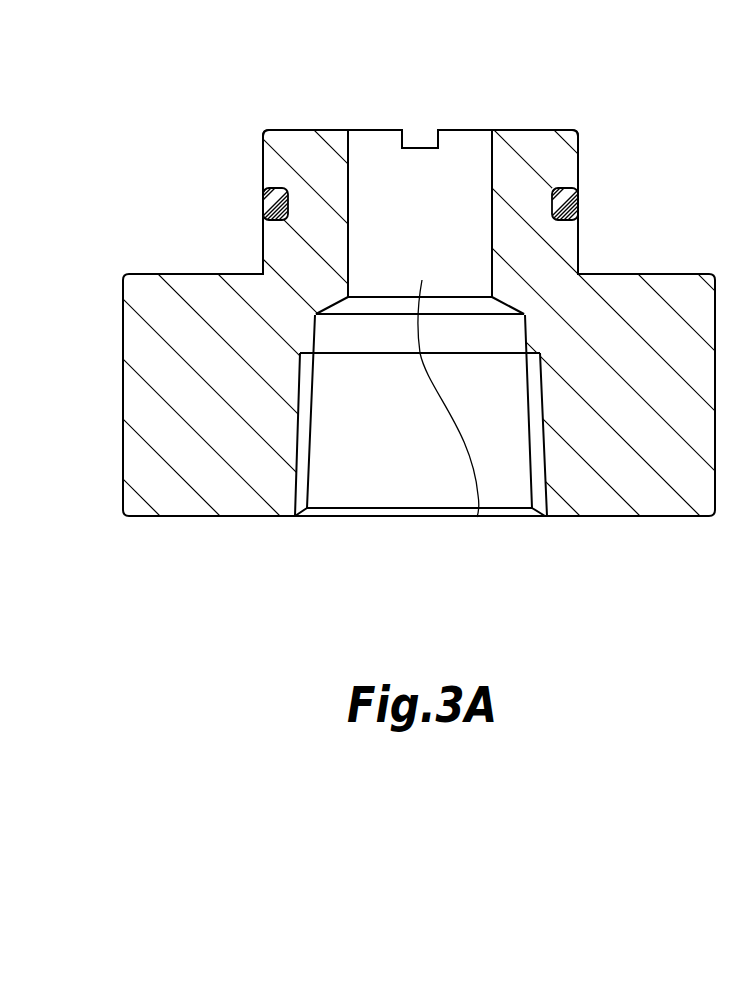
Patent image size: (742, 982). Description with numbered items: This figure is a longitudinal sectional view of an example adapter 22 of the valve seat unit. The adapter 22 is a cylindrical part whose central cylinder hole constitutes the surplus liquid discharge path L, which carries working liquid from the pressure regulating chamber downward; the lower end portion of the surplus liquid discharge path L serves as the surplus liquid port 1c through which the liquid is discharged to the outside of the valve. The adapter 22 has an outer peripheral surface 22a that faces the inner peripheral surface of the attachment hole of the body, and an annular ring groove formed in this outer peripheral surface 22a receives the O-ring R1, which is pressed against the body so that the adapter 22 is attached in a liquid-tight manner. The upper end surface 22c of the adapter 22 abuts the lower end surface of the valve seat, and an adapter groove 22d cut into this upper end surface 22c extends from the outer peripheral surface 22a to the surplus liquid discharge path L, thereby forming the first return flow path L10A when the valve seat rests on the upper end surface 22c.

The adapter 22 is at (152, 268).
The outer peripheral surface 22a is at (577, 242).
The upper end surface 22c is at (307, 128).
The adapter groove 22d is at (422, 140).
The first return flow path L10A is at (422, 140).
The O-ring R1 is at (574, 204).
The surplus liquid port 1c is at (358, 517).
The surplus liquid discharge path L is at (477, 517).